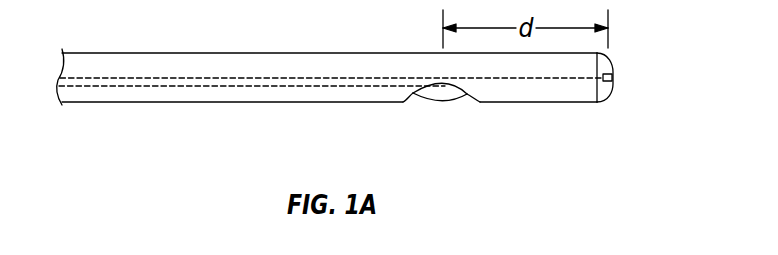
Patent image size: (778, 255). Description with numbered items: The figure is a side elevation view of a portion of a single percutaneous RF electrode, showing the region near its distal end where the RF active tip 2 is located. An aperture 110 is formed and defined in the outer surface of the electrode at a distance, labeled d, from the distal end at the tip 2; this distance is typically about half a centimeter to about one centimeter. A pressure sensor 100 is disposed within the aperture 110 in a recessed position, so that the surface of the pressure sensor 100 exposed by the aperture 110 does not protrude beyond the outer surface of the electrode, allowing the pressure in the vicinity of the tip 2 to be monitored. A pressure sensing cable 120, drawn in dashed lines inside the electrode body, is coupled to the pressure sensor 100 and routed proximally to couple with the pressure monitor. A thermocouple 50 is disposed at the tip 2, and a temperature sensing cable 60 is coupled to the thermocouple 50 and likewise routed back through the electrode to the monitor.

The tip 2 is at (297, 53).
The temperature sensing cable 60 is at (193, 78).
The pressure sensing cable 120 is at (188, 86).
The aperture 110 is at (410, 97).
The pressure sensor 100 is at (443, 100).
The thermocouple 50 is at (612, 77).